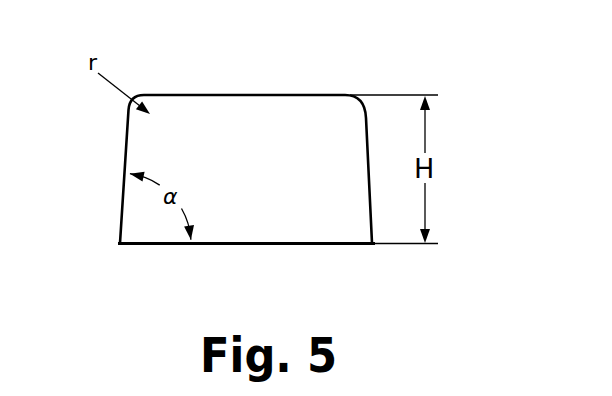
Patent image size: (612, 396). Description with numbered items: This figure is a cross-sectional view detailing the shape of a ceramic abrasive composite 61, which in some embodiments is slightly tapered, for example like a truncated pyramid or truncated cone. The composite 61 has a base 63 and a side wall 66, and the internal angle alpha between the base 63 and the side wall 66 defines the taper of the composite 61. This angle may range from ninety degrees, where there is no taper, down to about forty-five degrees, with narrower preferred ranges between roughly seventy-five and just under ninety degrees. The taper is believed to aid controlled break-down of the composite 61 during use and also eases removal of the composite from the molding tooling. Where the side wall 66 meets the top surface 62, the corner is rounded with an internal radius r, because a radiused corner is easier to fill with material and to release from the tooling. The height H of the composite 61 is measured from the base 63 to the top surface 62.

The ceramic abrasive composite 61 is at (219, 162).
The top surface 62 is at (210, 95).
The base 63 is at (170, 247).
The side wall 66 is at (125, 163).